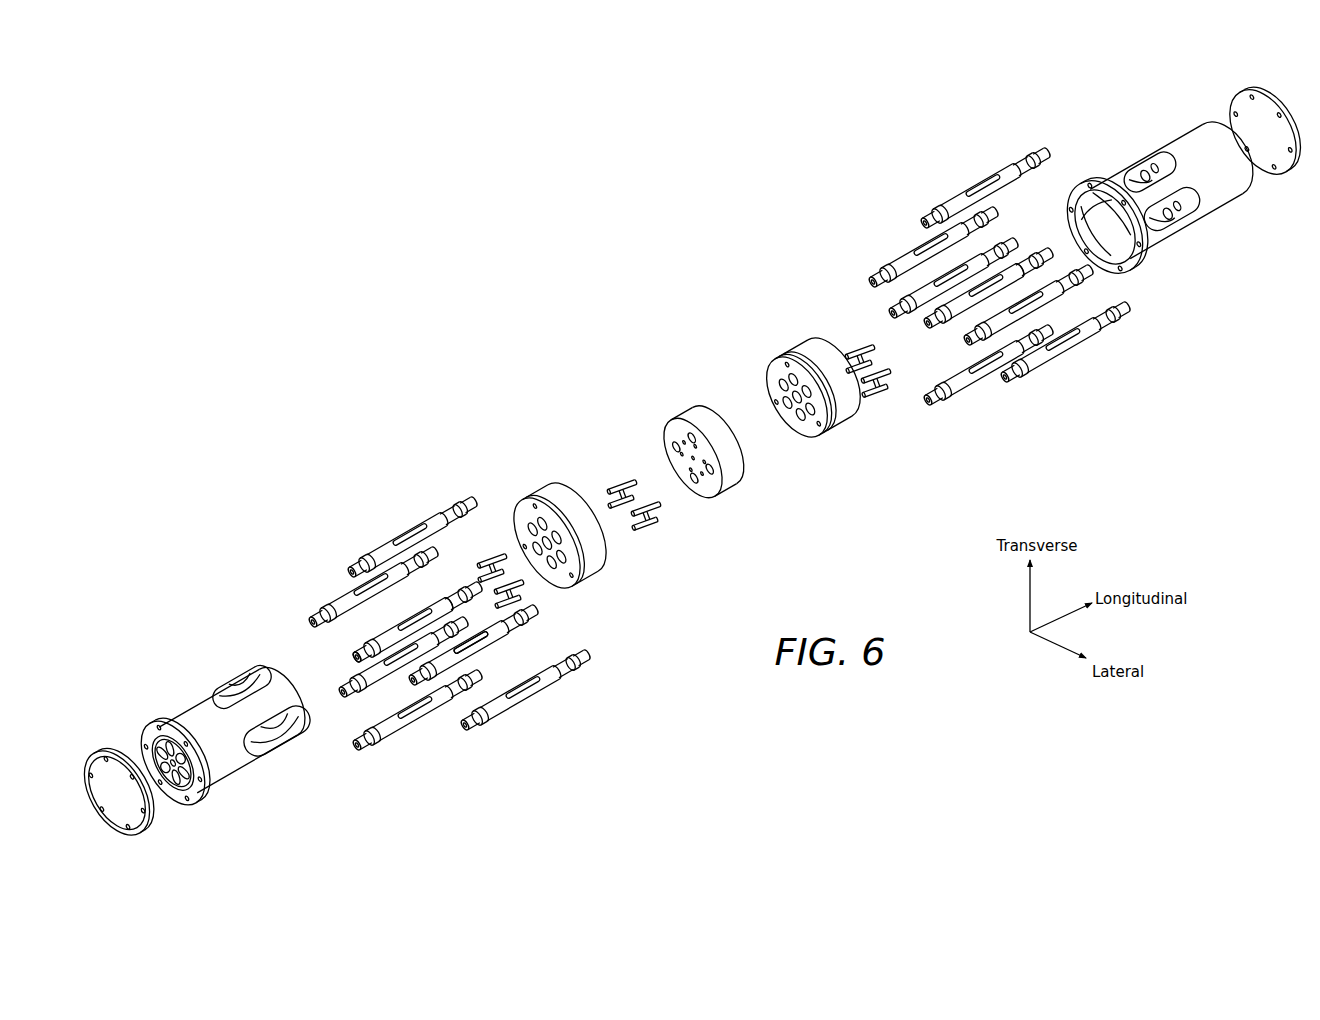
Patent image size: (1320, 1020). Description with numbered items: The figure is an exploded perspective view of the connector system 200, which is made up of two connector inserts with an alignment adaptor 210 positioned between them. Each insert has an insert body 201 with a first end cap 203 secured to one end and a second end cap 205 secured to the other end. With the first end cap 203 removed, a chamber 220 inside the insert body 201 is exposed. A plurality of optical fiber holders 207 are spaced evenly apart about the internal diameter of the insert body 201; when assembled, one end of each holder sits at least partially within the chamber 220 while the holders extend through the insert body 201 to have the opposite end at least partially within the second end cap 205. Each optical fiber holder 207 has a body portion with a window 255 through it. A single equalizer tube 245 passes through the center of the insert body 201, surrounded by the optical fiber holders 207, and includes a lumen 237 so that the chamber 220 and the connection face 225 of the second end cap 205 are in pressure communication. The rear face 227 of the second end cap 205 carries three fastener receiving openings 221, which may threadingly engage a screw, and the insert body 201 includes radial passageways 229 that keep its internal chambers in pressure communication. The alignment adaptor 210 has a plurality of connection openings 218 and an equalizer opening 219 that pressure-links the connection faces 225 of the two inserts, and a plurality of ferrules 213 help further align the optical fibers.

The connector system 200 is at (503, 298).
The insert body 201 is at (230, 795).
The first end cap 203 is at (116, 825).
The second end cap 205 is at (580, 582).
The optical fiber holder 207 is at (375, 548).
The alignment adaptor 210 is at (738, 456).
The ferrule 213 is at (614, 482).
The connection opening 218 is at (680, 442).
The equalizer opening 219 is at (720, 478).
The chamber 220 is at (163, 742).
The fastener receiving opening 221 is at (566, 592).
The connection face 225 is at (770, 380).
The rear face 227 is at (520, 514).
The radial passageway 229 is at (545, 524).
The lumen 237 is at (352, 660).
The equalizer tube 245 is at (382, 630).
The window 255 is at (483, 658).